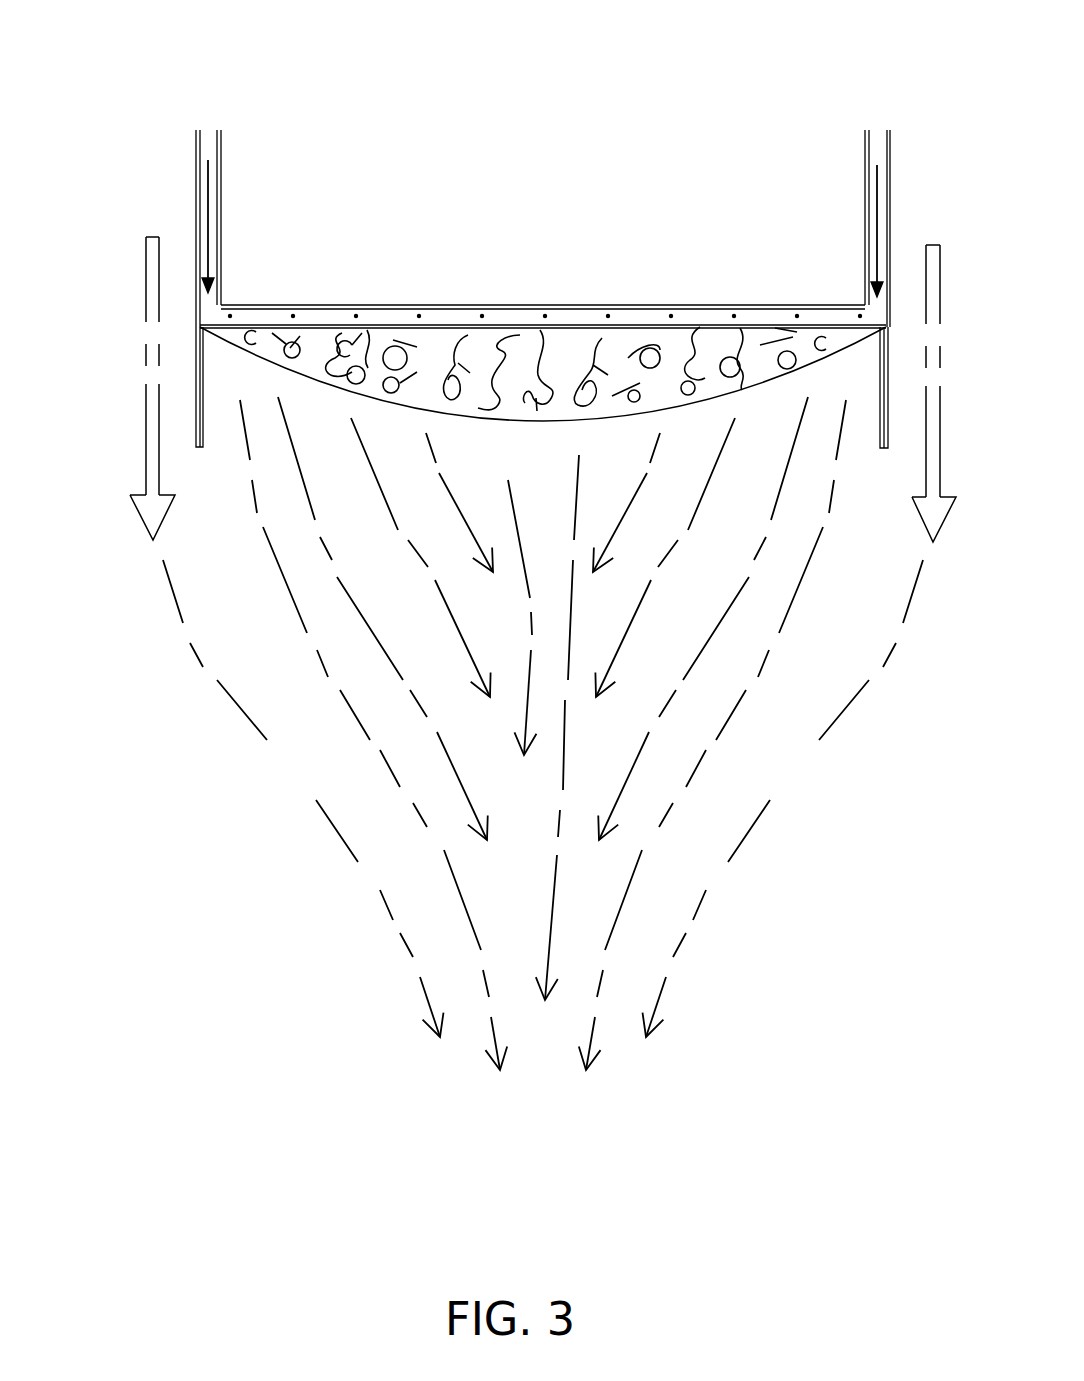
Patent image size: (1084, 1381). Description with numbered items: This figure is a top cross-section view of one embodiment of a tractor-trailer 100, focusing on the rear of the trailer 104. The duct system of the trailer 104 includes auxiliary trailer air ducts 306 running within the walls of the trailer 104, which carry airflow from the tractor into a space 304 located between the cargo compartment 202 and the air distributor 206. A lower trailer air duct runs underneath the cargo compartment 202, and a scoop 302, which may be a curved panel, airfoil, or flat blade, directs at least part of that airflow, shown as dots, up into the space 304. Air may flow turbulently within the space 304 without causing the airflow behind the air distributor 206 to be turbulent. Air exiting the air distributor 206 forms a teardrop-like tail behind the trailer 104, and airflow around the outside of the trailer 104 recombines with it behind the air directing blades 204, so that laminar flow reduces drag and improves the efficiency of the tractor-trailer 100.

The tractor-trailer 100 is at (134, 31).
The trailer 104 is at (116, 106).
The cargo compartment 202 is at (420, 230).
The air directing blades 204 is at (880, 447).
The air distributor 206 is at (673, 412).
The scoop 302 is at (518, 327).
The space 304 is at (578, 337).
The auxiliary trailer air ducts 306 is at (210, 148).